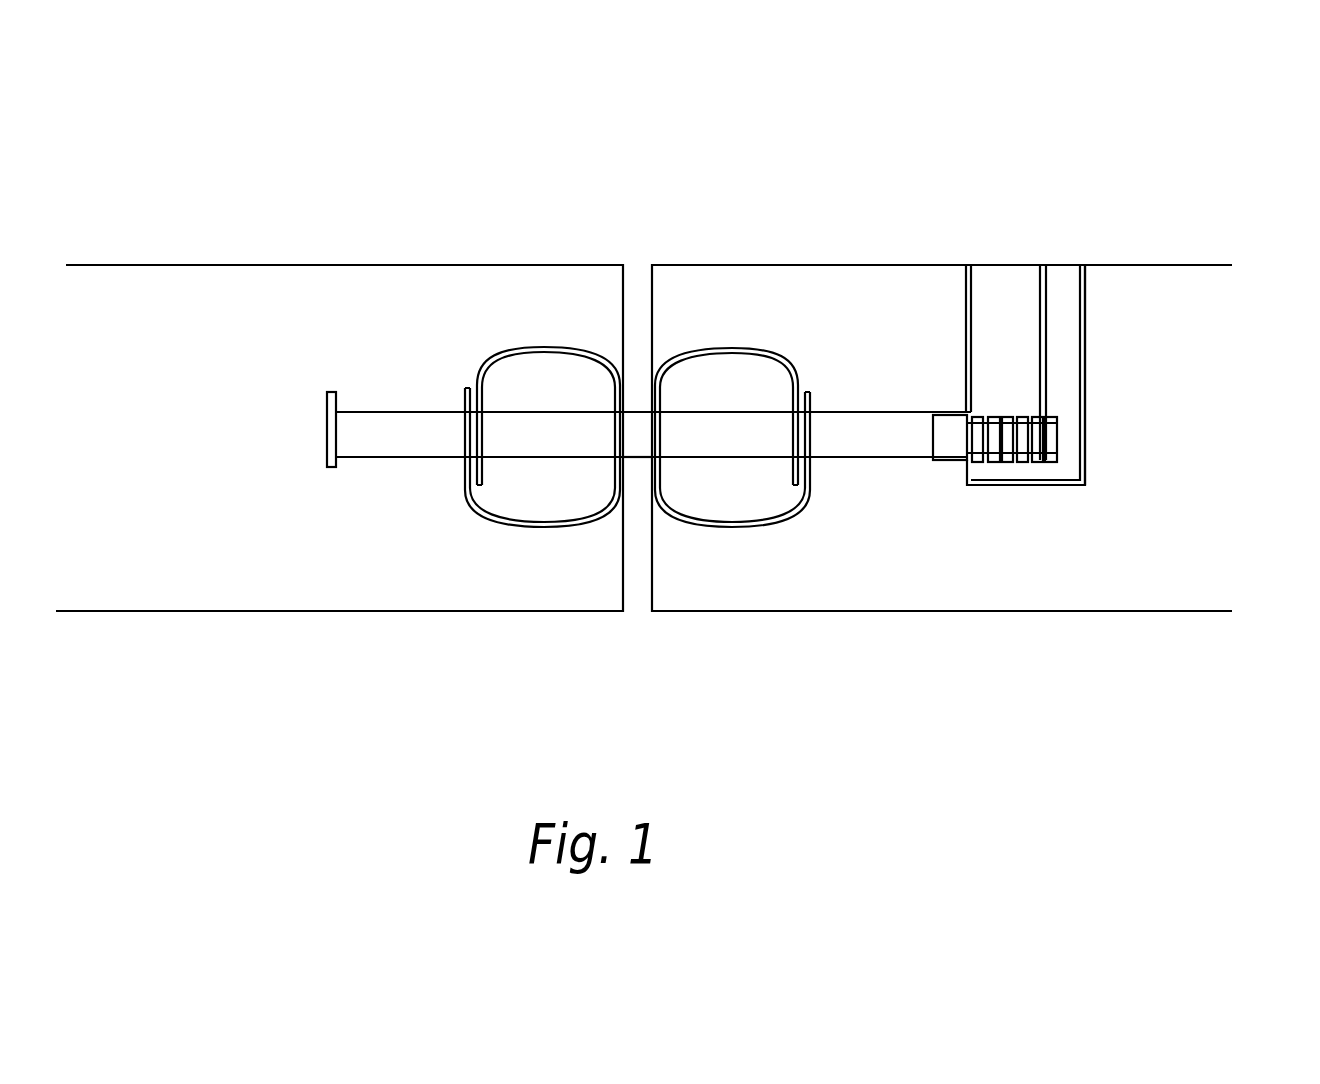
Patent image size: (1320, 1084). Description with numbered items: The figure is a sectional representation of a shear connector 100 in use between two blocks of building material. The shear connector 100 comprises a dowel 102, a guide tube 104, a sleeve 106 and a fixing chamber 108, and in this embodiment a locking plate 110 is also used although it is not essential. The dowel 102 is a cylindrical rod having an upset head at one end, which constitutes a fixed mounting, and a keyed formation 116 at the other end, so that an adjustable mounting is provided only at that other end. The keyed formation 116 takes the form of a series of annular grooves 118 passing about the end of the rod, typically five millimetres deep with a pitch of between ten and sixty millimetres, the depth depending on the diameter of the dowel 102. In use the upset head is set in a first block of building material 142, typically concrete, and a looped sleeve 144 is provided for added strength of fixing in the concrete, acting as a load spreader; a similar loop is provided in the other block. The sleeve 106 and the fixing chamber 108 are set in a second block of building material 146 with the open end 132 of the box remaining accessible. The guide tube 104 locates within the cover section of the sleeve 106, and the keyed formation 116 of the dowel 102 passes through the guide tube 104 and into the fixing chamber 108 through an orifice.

The shear connector 100 is at (640, 470).
The dowel 102 is at (396, 419).
The guide tube 104 is at (857, 430).
The sleeve 106 is at (871, 465).
The fixing chamber 108 is at (1085, 373).
The locking plate 110 is at (1045, 357).
The keyed formation 116 is at (1057, 443).
The annular grooves 118 is at (1015, 457).
The open end 132 is at (1012, 287).
The first block of building material 142 is at (286, 571).
The looped sleeve 144 is at (515, 348).
The second block of building material 146 is at (721, 296).